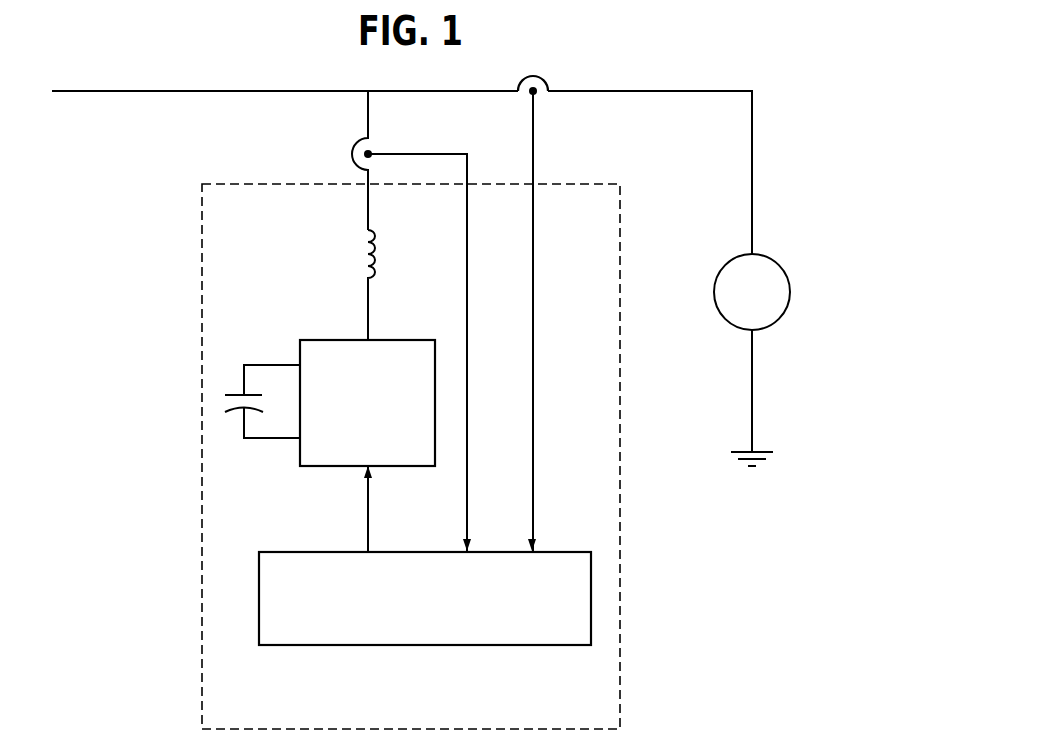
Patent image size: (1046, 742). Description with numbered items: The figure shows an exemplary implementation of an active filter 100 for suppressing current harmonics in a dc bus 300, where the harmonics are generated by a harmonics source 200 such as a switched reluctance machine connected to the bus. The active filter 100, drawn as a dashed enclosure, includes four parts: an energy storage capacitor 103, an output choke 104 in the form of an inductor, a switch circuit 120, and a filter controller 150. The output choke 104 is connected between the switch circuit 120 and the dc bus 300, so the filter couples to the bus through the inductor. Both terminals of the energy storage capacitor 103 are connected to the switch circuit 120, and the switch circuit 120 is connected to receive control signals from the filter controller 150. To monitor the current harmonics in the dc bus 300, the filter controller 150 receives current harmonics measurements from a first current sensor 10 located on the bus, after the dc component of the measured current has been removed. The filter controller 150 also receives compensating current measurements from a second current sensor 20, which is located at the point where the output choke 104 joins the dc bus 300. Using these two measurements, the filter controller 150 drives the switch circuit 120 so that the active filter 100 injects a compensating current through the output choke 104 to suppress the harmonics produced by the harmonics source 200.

The dc bus 300 is at (646, 91).
The first current sensor 10 is at (546, 104).
The second current sensor 20 is at (375, 143).
The active filter 100 is at (200, 268).
The output choke 104 is at (356, 259).
The switch circuit 120 is at (387, 340).
The energy storage capacitor 103 is at (232, 421).
The filter controller 150 is at (496, 645).
The harmonics source 200 is at (770, 331).